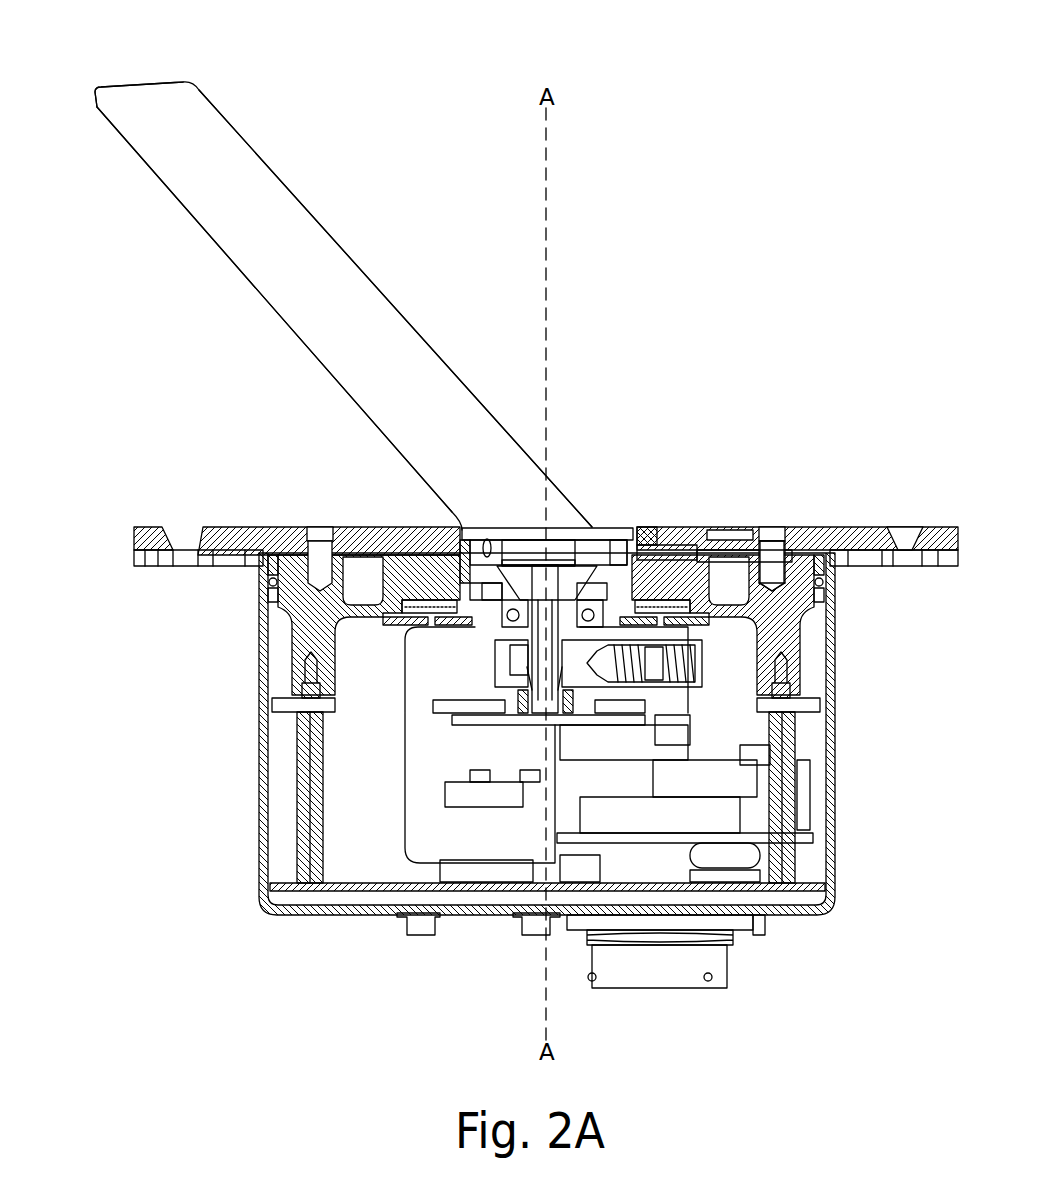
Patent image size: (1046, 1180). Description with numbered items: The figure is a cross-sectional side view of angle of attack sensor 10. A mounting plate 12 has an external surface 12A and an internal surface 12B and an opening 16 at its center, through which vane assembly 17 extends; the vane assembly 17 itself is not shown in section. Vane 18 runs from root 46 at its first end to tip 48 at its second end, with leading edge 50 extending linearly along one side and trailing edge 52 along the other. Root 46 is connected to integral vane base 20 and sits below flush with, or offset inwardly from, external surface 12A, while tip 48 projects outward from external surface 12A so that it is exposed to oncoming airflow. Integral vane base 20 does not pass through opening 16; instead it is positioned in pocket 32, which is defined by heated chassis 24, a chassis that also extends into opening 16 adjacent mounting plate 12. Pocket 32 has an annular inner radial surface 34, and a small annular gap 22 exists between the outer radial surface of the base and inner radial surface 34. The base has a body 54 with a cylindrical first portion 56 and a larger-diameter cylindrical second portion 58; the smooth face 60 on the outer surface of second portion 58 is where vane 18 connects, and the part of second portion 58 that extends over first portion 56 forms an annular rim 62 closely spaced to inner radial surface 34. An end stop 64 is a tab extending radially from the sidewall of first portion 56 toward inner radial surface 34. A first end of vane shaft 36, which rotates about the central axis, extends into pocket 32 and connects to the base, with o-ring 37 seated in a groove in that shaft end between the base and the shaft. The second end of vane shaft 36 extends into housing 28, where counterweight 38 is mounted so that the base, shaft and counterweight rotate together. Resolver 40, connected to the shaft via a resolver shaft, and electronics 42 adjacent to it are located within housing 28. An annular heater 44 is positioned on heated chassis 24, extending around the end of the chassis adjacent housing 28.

The angle of attack sensor 10 is at (666, 151).
The mounting plate 12 is at (500, 531).
The external surface 12A is at (223, 527).
The internal surface 12B is at (227, 550).
The opening 16 is at (652, 527).
The vane assembly 17 is at (233, 419).
The vane 18 is at (172, 129).
The integral vane base 20 is at (496, 521).
The annular gap 22 is at (590, 569).
The heated chassis 24 is at (700, 560).
The housing 28 is at (803, 913).
The pocket 32 is at (705, 640).
The inner radial surface 34 is at (705, 580).
The vane shaft 36 is at (520, 640).
The o-ring 37 is at (300, 592).
The counterweight 38 is at (700, 663).
The resolver 40 is at (485, 742).
The electronics 42 is at (755, 935).
The heater 44 is at (527, 612).
The root 46 is at (593, 550).
The tip 48 is at (152, 82).
The leading edge 50 is at (301, 200).
The trailing edge 52 is at (260, 291).
The body 54 is at (602, 527).
The first portion 56 is at (522, 528).
The second portion 58 is at (561, 540).
The face 60 is at (595, 530).
The rim 62 is at (373, 543).
The end stop 64 is at (812, 527).